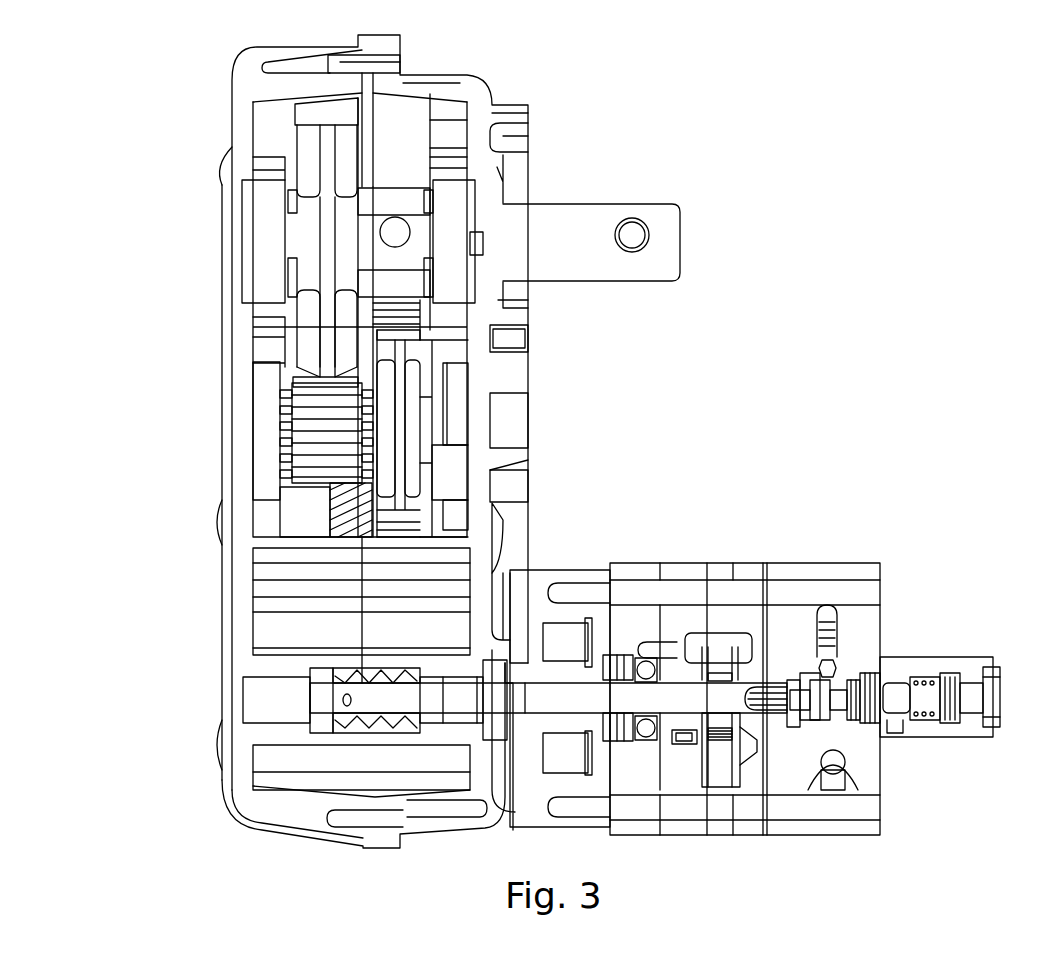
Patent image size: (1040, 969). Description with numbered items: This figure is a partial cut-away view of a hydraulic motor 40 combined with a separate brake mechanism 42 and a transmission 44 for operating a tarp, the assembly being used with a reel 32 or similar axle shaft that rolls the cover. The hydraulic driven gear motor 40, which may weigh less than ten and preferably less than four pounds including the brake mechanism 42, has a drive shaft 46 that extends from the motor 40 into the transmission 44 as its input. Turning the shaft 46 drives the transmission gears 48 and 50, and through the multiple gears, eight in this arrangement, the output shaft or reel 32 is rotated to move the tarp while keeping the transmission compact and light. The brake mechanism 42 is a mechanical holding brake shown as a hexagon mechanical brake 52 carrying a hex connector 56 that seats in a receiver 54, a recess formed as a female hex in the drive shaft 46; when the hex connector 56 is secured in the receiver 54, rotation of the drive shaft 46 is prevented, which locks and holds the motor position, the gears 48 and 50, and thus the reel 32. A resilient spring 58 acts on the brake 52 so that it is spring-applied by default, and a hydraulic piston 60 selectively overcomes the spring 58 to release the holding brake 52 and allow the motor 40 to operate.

The reel 32 is at (663, 233).
The hydraulic motor 40 is at (677, 563).
The brake mechanism 42 is at (903, 743).
The transmission 44 is at (527, 188).
The drive shaft 46 is at (560, 697).
The transmission gear 48 is at (333, 677).
The transmission gear 50 is at (320, 440).
The hexagon mechanical brake 52 is at (858, 700).
The receiver 54 is at (713, 700).
The hex connector 56 is at (760, 690).
The resilient spring 58 is at (947, 717).
The hydraulic piston 60 is at (817, 700).